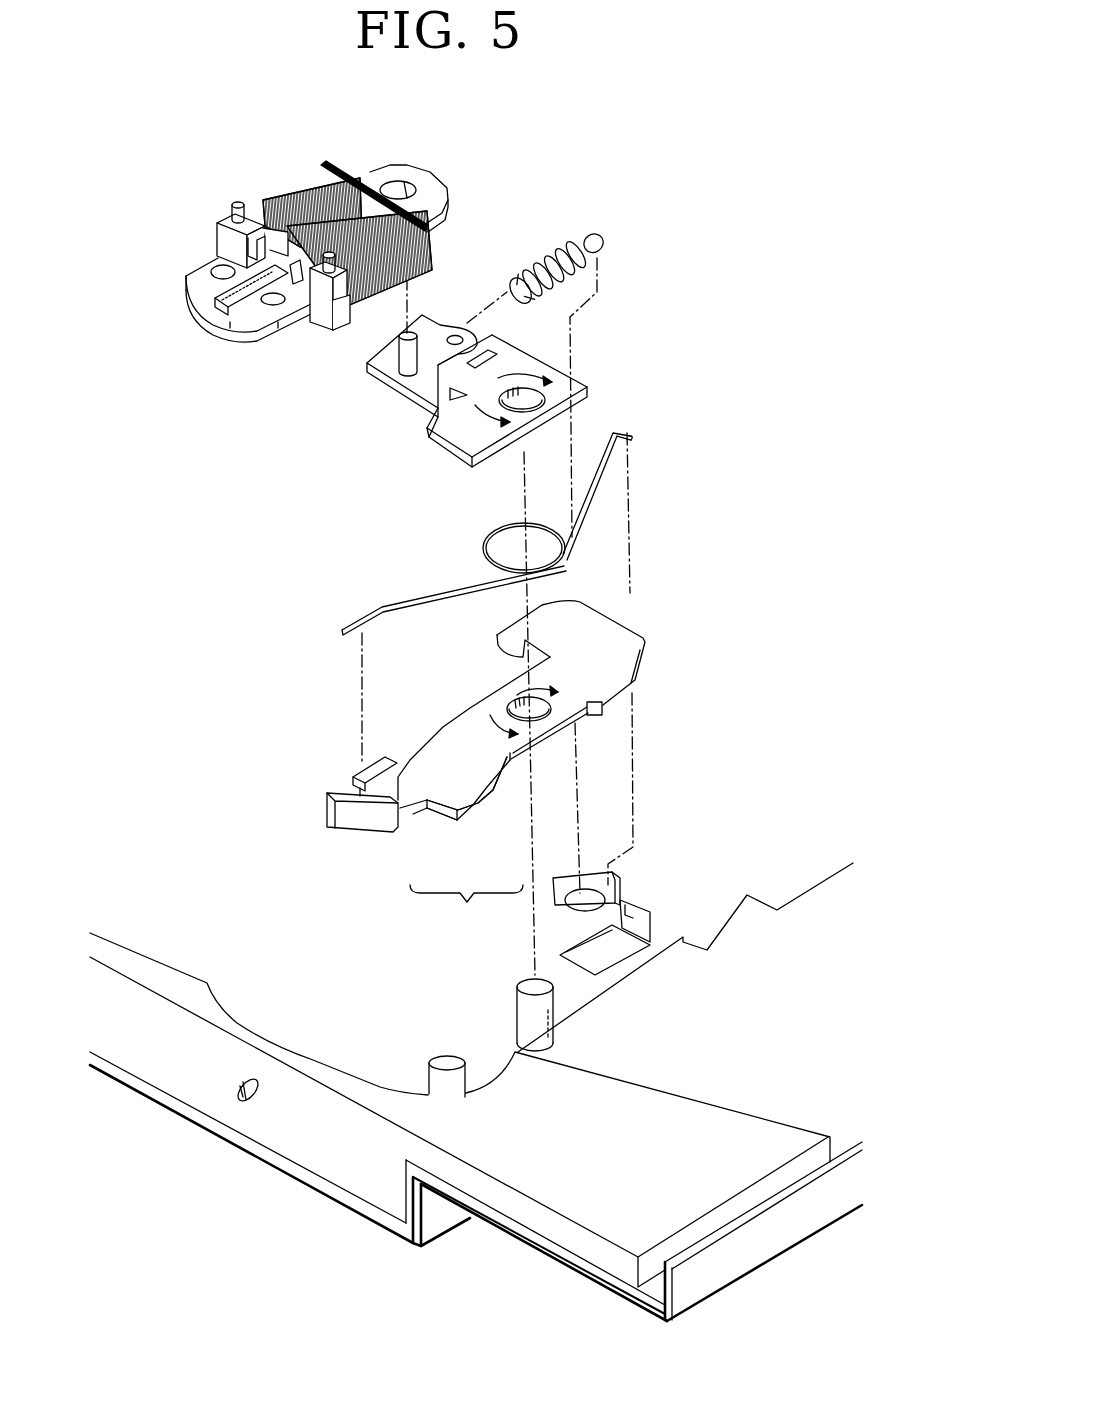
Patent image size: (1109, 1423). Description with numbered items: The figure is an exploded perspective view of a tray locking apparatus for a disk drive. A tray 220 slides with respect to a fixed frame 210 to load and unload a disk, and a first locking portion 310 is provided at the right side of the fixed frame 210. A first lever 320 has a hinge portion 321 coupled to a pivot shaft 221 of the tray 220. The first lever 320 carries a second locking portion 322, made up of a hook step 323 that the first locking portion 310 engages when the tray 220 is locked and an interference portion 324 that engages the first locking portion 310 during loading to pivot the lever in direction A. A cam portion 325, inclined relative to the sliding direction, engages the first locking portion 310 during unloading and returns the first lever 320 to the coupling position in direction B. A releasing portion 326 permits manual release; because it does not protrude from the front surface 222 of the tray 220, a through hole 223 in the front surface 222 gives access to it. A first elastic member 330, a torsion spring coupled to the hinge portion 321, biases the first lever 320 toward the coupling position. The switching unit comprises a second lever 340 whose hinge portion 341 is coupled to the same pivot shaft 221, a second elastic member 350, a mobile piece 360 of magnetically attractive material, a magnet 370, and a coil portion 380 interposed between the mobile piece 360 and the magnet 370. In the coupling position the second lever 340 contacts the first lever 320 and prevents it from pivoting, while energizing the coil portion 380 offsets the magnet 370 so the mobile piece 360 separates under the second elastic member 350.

The fixed frame 210 is at (763, 1250).
The tray 220 is at (770, 1110).
The pivot shaft 221 is at (515, 993).
The front surface 222 is at (327, 1157).
The through hole 223 is at (243, 1098).
The first locking portion 310 is at (435, 1057).
The first lever 320 is at (542, 753).
The hinge portion 321 is at (527, 705).
The second locking portion 322 is at (467, 846).
The hook step 323 is at (436, 818).
The interference portion 324 is at (493, 816).
The cam portion 325 is at (603, 712).
The releasing portion 326 is at (357, 820).
The first elastic member 330 is at (602, 480).
The second lever 340 is at (472, 411).
The hinge portion 341 is at (525, 390).
The second elastic member 350 is at (558, 250).
The mobile piece 360 is at (423, 183).
The magnet 370 is at (240, 286).
The coil portion 380 is at (307, 193).